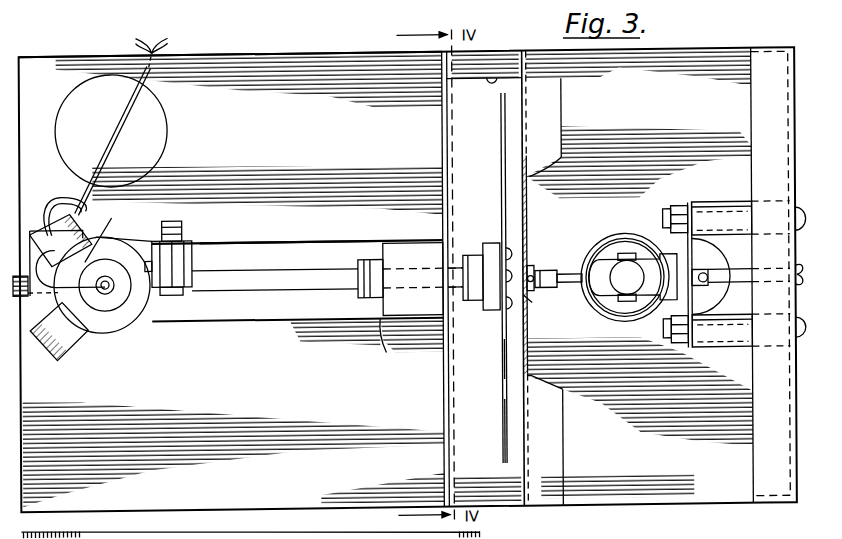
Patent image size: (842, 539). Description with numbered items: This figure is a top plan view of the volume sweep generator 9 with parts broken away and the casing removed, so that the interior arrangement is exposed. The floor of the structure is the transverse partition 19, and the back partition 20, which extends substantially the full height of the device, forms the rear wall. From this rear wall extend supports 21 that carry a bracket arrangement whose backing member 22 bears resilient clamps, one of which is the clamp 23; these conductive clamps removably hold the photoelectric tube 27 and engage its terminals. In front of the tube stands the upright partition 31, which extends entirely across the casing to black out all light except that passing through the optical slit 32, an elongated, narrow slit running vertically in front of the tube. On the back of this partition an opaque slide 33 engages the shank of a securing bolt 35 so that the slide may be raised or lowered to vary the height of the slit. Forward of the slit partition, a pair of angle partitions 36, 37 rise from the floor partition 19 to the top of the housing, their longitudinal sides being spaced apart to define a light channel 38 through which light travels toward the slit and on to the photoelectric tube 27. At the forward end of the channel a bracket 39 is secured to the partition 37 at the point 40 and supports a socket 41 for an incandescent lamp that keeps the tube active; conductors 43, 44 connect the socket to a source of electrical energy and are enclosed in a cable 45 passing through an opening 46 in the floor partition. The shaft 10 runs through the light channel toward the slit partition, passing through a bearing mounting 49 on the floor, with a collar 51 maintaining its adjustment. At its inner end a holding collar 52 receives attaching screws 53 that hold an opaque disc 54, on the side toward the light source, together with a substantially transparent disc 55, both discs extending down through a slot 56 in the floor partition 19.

The volume sweep generator 9 is at (336, 46).
The shaft 10 is at (230, 286).
The transverse partition 19 is at (713, 473).
The back partition 20 is at (760, 106).
The supports 21 is at (722, 208).
The backing member 22 is at (688, 204).
The resilient clamp 23 is at (620, 250).
The photoelectric tube 27 is at (603, 242).
The upright partition 31 is at (540, 441).
The optical slit 32 is at (535, 264).
The opaque slide 33 is at (530, 302).
The securing bolt 35 is at (544, 285).
The angle partition 36 is at (443, 382).
The angle partition 37 is at (440, 207).
The light channel 38 is at (288, 241).
The bracket 39 is at (110, 243).
The bracket securing point 40 is at (187, 231).
The socket 41 is at (113, 297).
The electrical conductor 43 is at (55, 198).
The electrical conductor 44 is at (82, 210).
The cable 45 is at (114, 140).
The opening 46 is at (161, 108).
The bearing mounting 49 is at (393, 294).
The collar 51 is at (358, 265).
The holding collar 52 is at (489, 256).
The attaching screws 53 is at (503, 322).
The opaque disc 54 is at (501, 362).
The disc 55 is at (503, 429).
The slot 56 is at (497, 79).